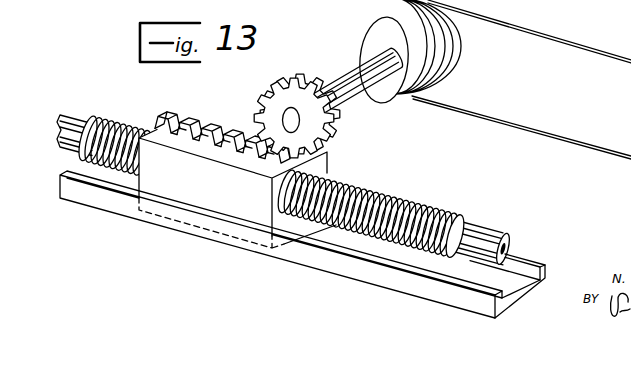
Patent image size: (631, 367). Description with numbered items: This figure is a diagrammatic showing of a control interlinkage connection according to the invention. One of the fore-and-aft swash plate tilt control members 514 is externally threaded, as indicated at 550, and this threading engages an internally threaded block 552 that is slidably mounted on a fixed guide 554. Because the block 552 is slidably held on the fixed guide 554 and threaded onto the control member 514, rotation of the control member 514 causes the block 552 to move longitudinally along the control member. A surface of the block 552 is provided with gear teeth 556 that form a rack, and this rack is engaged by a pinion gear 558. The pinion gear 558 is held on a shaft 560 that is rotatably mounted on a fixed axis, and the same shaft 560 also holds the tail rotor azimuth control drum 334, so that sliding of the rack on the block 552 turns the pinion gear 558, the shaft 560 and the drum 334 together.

The fore-and-aft swash plate tilt control member 514 is at (72, 131).
The external threading 550 is at (413, 203).
The block 552 is at (325, 170).
The fixed guide 554 is at (299, 257).
The gear teeth 556 is at (218, 122).
The pinion gear 558 is at (333, 128).
The shaft 560 is at (347, 82).
The tail rotor azimuth control drum 334 is at (402, 90).